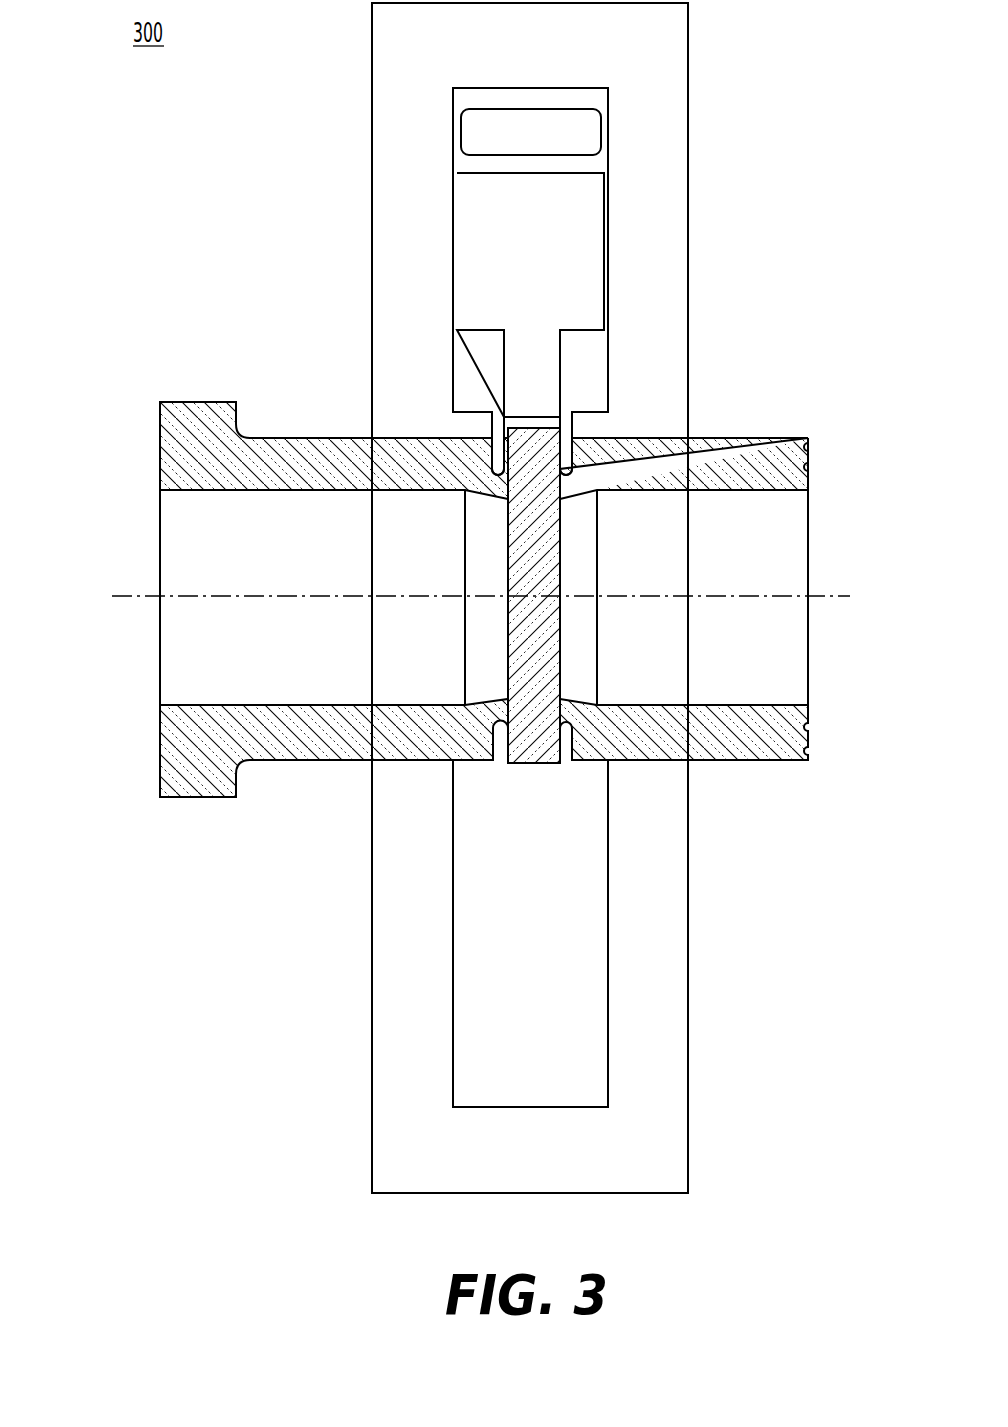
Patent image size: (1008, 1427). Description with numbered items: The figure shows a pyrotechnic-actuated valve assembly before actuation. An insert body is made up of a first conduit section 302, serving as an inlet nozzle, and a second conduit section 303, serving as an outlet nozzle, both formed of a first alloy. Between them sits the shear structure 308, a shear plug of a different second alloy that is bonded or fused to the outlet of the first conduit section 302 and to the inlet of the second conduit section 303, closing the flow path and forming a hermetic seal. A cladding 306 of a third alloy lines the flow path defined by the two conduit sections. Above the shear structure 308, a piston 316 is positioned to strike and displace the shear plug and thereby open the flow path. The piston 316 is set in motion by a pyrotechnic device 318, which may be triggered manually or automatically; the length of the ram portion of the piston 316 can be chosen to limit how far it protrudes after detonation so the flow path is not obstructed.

The first conduit section 302 is at (191, 447).
The second conduit section 303 is at (768, 452).
The cladding 306 is at (228, 704).
The shear structure 308 is at (538, 740).
The piston 316 is at (584, 275).
The pyrotechnic device 318 is at (582, 134).